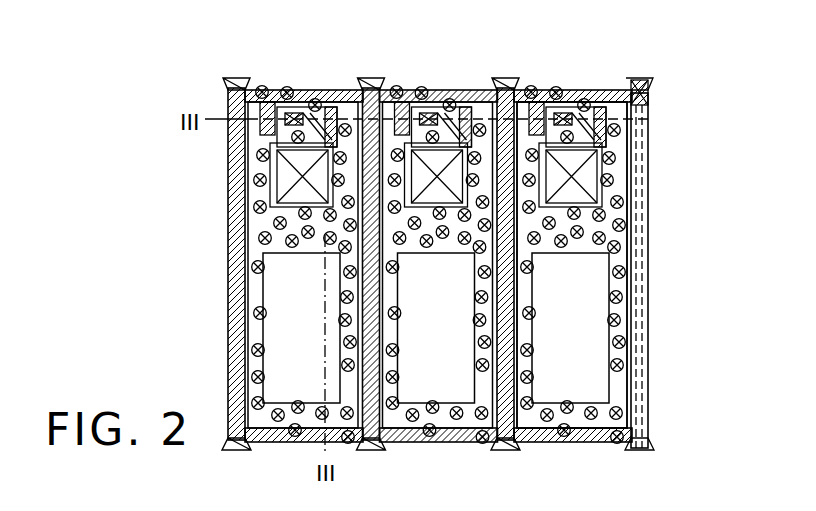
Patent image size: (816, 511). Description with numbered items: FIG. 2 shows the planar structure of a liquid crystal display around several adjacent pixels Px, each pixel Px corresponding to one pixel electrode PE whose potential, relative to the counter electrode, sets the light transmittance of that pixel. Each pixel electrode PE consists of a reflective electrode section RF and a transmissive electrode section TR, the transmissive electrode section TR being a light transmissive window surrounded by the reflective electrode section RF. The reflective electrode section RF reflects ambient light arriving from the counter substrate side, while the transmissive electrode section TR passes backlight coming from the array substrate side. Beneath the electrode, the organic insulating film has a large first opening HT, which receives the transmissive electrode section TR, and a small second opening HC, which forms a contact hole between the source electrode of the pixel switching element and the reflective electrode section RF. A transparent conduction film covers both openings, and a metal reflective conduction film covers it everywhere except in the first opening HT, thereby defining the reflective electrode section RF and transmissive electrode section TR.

The pixel electrode PE is at (703, 143).
The reflective electrode section RF is at (618, 174).
The transmissive electrode section TR is at (590, 300).
The second opening HC is at (585, 139).
The first opening HT is at (623, 401).
The pixel Px is at (363, 73).